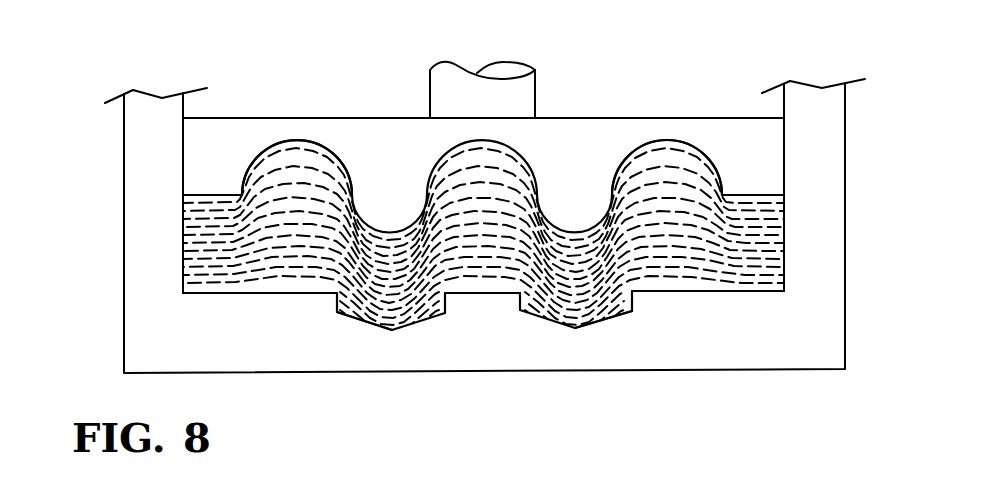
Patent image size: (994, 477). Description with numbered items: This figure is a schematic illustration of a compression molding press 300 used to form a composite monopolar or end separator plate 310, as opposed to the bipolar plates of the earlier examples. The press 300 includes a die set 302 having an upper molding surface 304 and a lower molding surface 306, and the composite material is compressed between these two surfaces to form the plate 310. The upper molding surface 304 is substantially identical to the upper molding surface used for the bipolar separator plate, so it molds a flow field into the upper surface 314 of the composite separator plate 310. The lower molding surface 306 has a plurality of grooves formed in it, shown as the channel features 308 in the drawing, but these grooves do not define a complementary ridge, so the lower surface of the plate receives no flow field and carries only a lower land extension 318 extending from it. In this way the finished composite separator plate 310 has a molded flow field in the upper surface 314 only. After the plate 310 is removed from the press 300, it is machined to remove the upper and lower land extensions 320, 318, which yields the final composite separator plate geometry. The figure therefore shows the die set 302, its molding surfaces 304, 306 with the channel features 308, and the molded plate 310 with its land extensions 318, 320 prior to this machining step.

The compression molding press 300 is at (882, 74).
The die set 302 is at (198, 290).
The upper molding surface 304 is at (332, 134).
The lower molding surface 306 is at (308, 307).
The flow channel 308 is at (537, 315).
The composite end separator plate 310 is at (706, 277).
The upper surface 314 is at (804, 471).
The lower land extension 318 is at (366, 322).
The upper land extension 320 is at (287, 165).